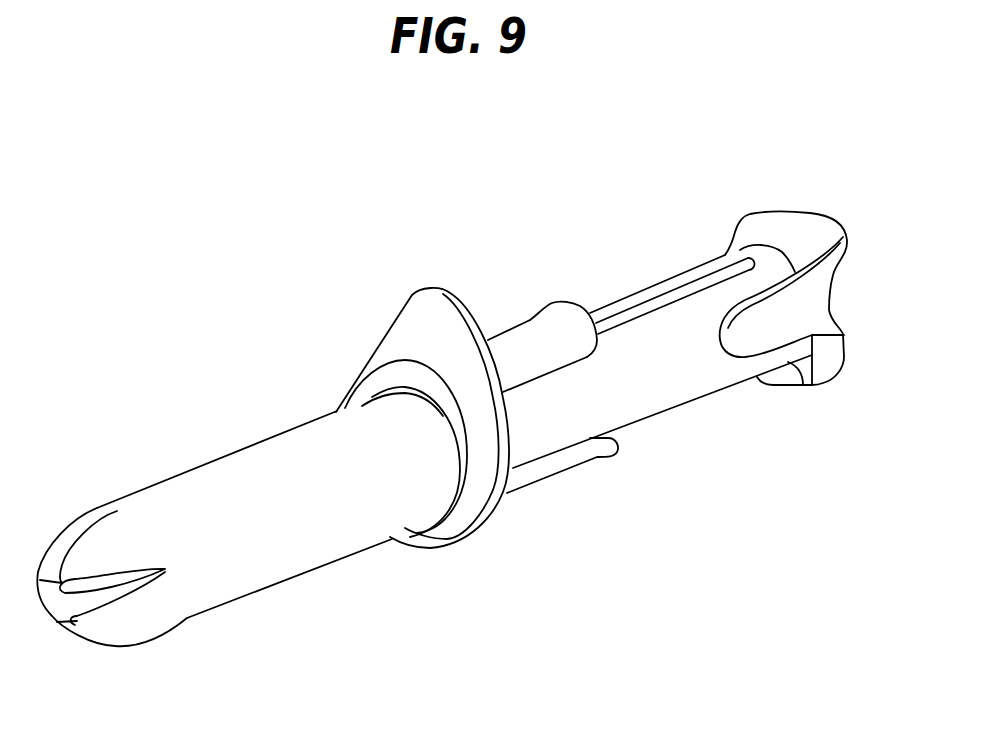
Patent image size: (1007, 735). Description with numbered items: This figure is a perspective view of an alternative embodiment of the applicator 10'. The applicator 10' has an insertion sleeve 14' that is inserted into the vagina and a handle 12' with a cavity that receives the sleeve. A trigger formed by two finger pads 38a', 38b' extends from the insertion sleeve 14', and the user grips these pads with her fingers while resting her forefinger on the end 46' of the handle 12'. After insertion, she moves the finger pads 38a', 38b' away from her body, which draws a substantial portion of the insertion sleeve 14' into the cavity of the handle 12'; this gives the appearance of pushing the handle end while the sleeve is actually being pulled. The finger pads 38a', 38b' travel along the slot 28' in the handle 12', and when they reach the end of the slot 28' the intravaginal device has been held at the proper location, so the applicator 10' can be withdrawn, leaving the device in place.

The applicator 10' is at (348, 374).
The handle 12' is at (650, 377).
The insertion sleeve 14' is at (252, 503).
The slot 28' is at (675, 248).
The finger pad 38a' is at (532, 297).
The finger pad 38b' is at (572, 503).
The end of the handle 46' is at (829, 298).